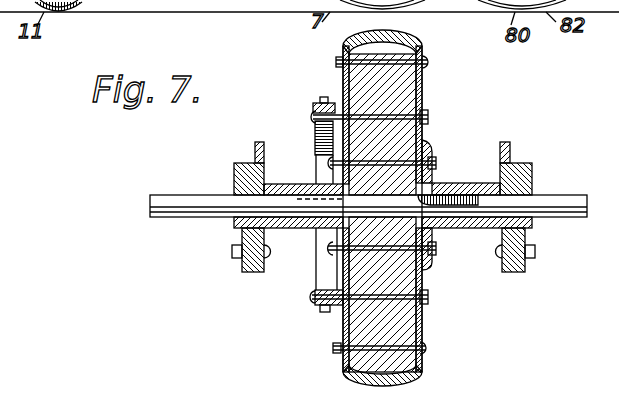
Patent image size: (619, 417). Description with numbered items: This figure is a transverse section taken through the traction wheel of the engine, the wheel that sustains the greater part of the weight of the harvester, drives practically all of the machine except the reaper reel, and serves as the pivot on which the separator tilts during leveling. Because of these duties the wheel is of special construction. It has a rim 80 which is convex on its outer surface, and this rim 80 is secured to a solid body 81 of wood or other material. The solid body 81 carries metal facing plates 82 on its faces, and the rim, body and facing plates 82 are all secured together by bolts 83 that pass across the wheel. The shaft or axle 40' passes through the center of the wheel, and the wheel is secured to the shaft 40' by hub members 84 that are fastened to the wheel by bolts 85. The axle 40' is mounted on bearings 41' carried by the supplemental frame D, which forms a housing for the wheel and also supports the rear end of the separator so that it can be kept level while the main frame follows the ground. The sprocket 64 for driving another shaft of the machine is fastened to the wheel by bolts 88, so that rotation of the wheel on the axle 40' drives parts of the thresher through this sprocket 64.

The axle 40' is at (369, 192).
The bearings 41' is at (382, 207).
The supplemental frame D is at (530, 264).
The hub members 84 is at (304, 190).
The metal facing plates 82 is at (423, 83).
The solid body 81 is at (404, 98).
The rim 80 is at (399, 38).
The bolts 83 is at (430, 61).
The bolts 88 is at (430, 117).
The bolts 85 is at (326, 162).
The sprocket 64 is at (318, 281).